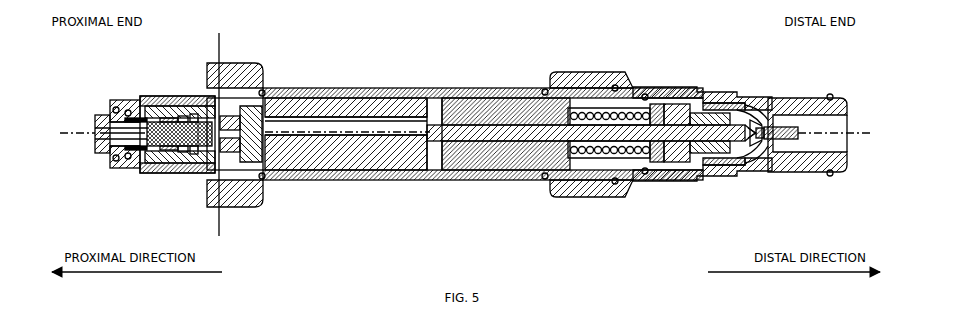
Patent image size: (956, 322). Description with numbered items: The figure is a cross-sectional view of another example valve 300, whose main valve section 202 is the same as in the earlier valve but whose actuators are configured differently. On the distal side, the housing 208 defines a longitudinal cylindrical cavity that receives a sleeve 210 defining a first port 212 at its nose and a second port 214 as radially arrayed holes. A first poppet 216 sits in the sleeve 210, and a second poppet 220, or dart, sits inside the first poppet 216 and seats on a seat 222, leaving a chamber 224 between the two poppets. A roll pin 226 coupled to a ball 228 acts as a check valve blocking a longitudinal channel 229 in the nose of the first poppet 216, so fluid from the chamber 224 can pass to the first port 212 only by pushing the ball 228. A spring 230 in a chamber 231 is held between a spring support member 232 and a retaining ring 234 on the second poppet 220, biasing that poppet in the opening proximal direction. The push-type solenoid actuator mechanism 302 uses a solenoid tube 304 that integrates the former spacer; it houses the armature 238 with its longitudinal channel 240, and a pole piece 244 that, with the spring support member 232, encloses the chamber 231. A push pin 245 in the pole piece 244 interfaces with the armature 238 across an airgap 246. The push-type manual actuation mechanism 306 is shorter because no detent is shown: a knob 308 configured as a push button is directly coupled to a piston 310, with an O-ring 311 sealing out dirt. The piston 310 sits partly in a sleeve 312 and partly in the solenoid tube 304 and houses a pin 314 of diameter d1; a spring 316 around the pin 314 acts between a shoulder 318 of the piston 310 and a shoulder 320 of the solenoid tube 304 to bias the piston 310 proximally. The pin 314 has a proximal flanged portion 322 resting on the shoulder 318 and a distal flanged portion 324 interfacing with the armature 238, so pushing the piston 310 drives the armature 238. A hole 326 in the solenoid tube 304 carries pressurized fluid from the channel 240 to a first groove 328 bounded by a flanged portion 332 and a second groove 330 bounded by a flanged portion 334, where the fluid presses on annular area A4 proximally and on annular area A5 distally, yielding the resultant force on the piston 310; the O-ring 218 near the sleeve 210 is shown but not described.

The valve 300 is at (52, 78).
The push-type solenoid actuator mechanism 302 is at (363, 63).
The solenoid tube 304 is at (438, 88).
The push-type manual actuation mechanism 306 is at (181, 63).
The knob 308 is at (100, 115).
The piston 310 is at (134, 155).
The O-ring 311 is at (122, 160).
The sleeve 312 is at (135, 113).
The pin 314 is at (162, 147).
The spring 316 is at (162, 150).
The shoulder 318 is at (135, 137).
The shoulder 320 is at (227, 150).
The flanged portion 322 is at (150, 126).
The flanged portion 324 is at (262, 165).
The hole 326 is at (247, 100).
The first groove 328 is at (124, 106).
The second groove 330 is at (180, 152).
The flanged portion 332 is at (117, 117).
The flanged portion 334 is at (192, 154).
The annular surface area A4 is at (112, 162).
The annular surface area A5 is at (195, 108).
The diameter of the pin d1 is at (221, 40).
The armature 238 is at (319, 107).
The longitudinal channel 240 is at (391, 122).
The pole piece 244 is at (486, 108).
The push pin 245 is at (510, 148).
The airgap 246 is at (440, 170).
The housing 208 is at (562, 76).
The retaining ring 234 is at (580, 120).
The chamber 231 is at (626, 162).
The spring 230 is at (628, 104).
The spring support member 232 is at (655, 102).
The second poppet 220 is at (682, 178).
The main valve section 202 is at (717, 63).
The chamber 224 is at (738, 154).
The second port 214 is at (756, 92).
The first poppet 216 is at (752, 140).
The seat 222 is at (758, 147).
The longitudinal channel 229 is at (753, 130).
The ball 228 is at (762, 127).
The roll pin 226 is at (785, 127).
The sleeve 210 is at (842, 98).
The o-ring 218 is at (790, 160).
The first port 212 is at (850, 143).